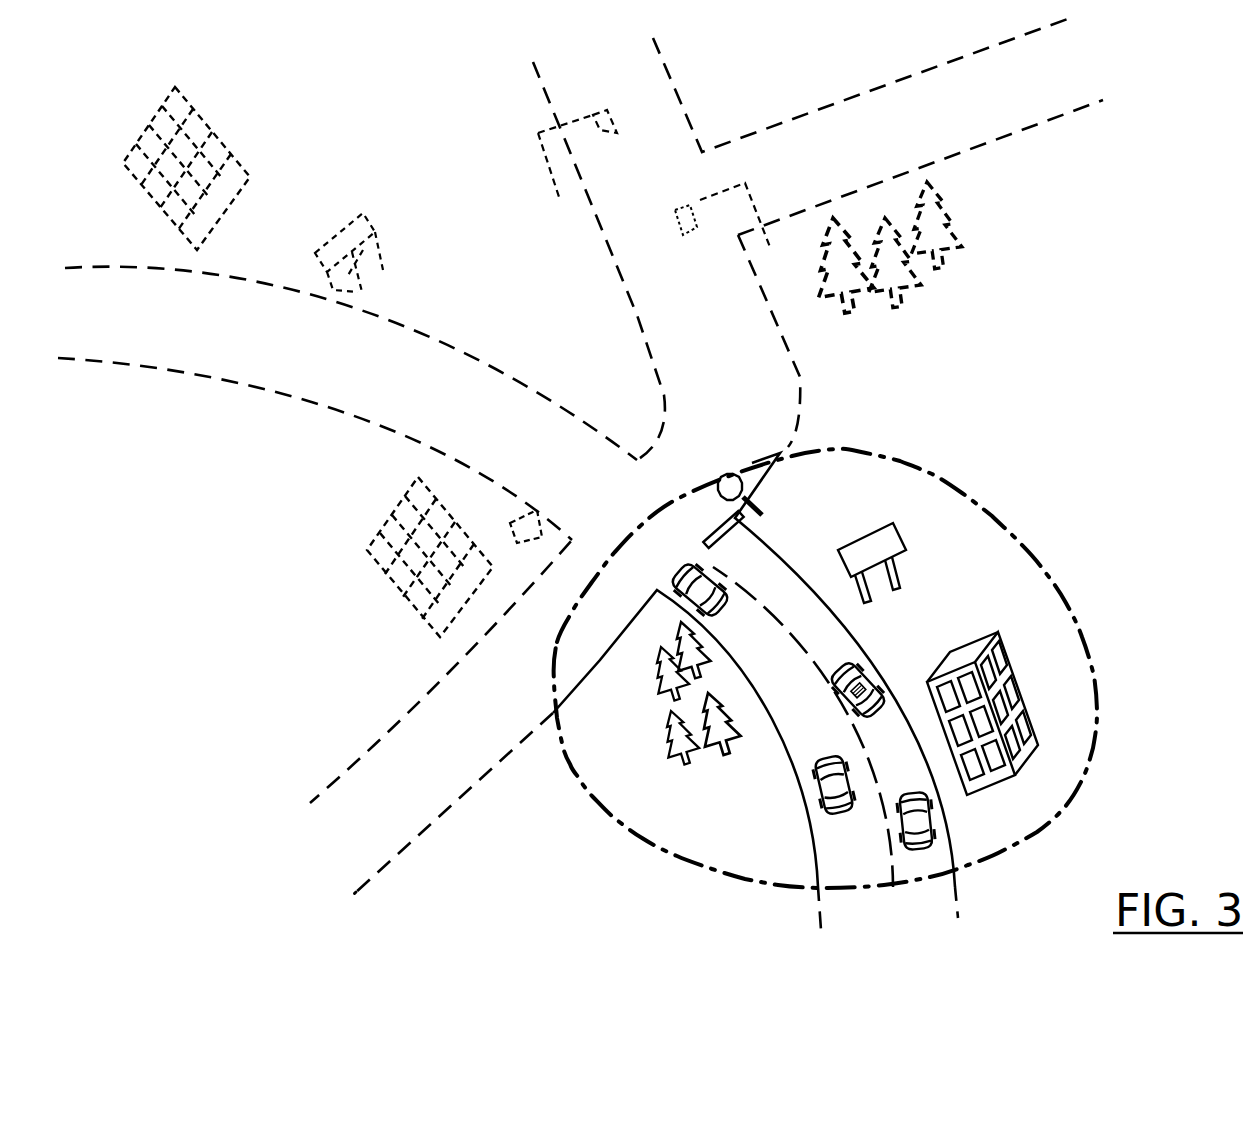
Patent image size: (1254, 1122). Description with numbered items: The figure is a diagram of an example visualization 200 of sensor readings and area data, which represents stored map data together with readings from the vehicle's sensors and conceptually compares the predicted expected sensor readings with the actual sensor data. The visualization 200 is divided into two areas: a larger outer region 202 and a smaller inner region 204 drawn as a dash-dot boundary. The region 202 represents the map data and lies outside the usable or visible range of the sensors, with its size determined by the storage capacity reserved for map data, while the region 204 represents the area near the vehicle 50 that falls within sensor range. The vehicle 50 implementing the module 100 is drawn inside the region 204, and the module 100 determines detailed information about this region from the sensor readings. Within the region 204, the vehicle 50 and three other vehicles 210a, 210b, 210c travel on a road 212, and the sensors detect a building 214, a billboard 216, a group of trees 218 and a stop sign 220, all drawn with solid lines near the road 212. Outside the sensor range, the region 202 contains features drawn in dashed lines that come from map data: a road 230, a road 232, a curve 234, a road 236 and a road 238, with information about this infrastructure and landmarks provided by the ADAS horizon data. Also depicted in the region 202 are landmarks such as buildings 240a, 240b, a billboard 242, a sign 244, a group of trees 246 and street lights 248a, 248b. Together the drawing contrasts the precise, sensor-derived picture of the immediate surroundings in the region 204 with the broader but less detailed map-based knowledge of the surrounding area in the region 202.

The visualization 200 is at (291, 43).
The region 202 is at (381, 141).
The region 204 is at (912, 462).
The vehicle 50 is at (857, 660).
The module 100 is at (873, 653).
The vehicle 210a is at (675, 578).
The vehicle 210b is at (833, 808).
The vehicle 210c is at (935, 822).
The road 212 is at (811, 603).
The building 214 is at (1020, 680).
The billboard 216 is at (898, 535).
The group of trees 218 is at (682, 743).
The stop sign 220 is at (757, 504).
The road 230 is at (220, 378).
The road 232 is at (395, 730).
The curve 234 is at (800, 380).
The road 236 is at (662, 55).
The road 238 is at (886, 153).
The building 240a is at (385, 508).
The building 240b is at (150, 108).
The billboard 242 is at (368, 222).
The sign 244 is at (520, 515).
The group of trees 246 is at (945, 225).
The street light 248a is at (538, 133).
The street light 248b is at (700, 200).